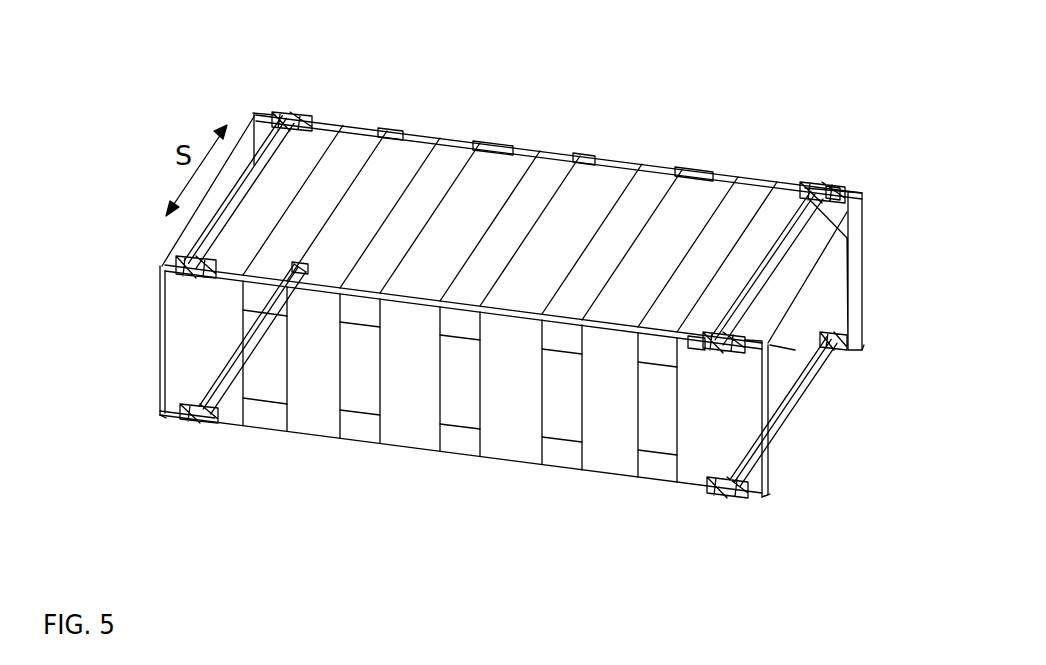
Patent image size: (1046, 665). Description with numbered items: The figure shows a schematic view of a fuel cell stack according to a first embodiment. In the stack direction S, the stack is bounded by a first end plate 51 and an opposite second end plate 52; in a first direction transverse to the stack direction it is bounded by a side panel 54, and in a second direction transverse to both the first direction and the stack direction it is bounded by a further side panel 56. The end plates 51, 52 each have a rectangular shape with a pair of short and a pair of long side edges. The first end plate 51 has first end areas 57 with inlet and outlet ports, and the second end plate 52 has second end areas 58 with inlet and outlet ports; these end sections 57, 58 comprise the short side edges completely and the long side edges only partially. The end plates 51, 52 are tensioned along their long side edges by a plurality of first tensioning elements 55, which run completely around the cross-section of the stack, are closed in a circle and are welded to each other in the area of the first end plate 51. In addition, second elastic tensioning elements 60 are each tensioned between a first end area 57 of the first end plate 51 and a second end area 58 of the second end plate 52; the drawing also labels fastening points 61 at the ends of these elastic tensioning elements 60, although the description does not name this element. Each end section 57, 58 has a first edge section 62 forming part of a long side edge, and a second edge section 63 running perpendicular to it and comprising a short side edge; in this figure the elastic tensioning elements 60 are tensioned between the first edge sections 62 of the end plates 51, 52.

The first end plate 51 is at (530, 445).
The second end plate 52 is at (505, 132).
The side panel 54 is at (790, 360).
The first tensioning element 55 is at (355, 142).
The side panel 56 is at (598, 186).
The first end area 57 is at (183, 313).
The second end area 58 is at (253, 118).
The second elastic tensioning element 60 is at (205, 237).
The fastening bracket 61 is at (305, 115).
The first edge section 62 is at (292, 113).
The second edge section 63 is at (160, 400).